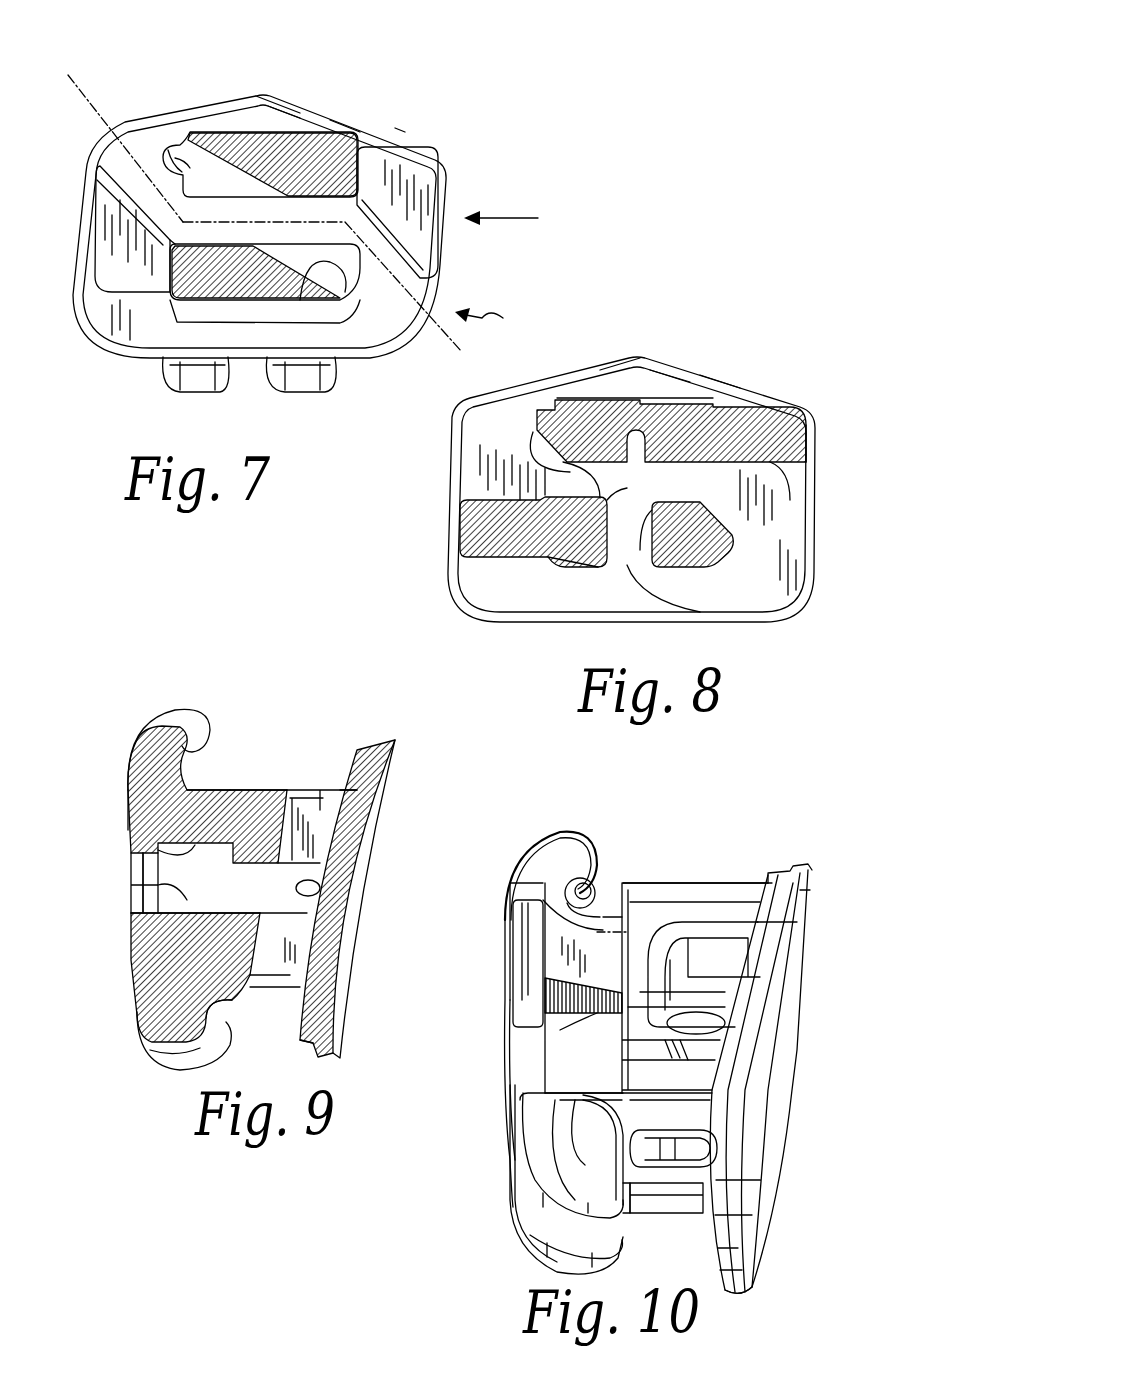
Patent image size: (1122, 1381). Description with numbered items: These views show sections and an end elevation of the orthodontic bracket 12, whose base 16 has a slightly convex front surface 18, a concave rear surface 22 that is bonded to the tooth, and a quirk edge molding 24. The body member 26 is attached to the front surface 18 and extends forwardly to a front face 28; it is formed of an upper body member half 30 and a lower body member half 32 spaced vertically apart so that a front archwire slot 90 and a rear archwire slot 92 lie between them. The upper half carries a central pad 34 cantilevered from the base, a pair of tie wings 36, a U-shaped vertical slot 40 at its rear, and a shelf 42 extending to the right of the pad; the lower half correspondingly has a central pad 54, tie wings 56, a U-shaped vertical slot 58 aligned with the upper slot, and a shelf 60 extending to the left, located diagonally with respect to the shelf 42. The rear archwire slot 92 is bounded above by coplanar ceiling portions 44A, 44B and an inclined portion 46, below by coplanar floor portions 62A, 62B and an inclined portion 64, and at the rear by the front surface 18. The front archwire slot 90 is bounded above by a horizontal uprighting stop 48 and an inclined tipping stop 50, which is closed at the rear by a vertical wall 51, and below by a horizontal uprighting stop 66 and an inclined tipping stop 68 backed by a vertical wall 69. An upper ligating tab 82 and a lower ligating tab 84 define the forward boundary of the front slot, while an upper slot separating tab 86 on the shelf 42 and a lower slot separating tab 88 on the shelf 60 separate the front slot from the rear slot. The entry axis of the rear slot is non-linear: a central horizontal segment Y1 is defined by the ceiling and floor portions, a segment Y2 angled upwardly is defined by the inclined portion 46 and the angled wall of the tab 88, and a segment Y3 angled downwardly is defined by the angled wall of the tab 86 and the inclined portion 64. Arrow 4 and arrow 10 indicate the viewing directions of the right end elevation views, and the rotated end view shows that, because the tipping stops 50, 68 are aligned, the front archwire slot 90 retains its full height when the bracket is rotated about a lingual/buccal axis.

In FIG. 7, the arrow 4 is at (538, 218).
In FIG. 7, the arrow 10 is at (496, 310).
In FIG. 7, the bracket 12 is at (226, 82).
In FIG. 8, the bracket 12 is at (800, 372).
In FIG. 9, the bracket 12 is at (118, 704).
In FIG. 10, the bracket 12 is at (533, 816).
In FIG. 7, the base 16 is at (270, 88).
In FIG. 8, the base 16 is at (722, 360).
In FIG. 9, the base 16 is at (374, 733).
In FIG. 10, the base 16 is at (818, 850).
In FIG. 7, the front surface 18 is at (290, 118).
In FIG. 8, the front surface 18 is at (660, 372).
In FIG. 9, the front surface 18 is at (343, 790).
In FIG. 10, the front surface 18 is at (717, 1103).
In FIG. 9, the rear surface 22 is at (350, 933).
In FIG. 10, the rear surface 22 is at (780, 1057).
In FIG. 7, the quirk edge molding 24 is at (347, 112).
In FIG. 8, the quirk edge molding 24 is at (625, 362).
In FIG. 9, the quirk edge molding 24 is at (303, 1060).
In FIG. 10, the quirk edge molding 24 is at (723, 1297).
In FIG. 7, the body member 26 is at (362, 130).
In FIG. 8, the body member 26 is at (828, 437).
In FIG. 9, the body member 26 is at (206, 762).
In FIG. 10, the body member 26 is at (704, 862).
In FIG. 9, the front face 28 is at (127, 817).
In FIG. 10, the front face 28 is at (508, 955).
In FIG. 9, the upper body member half 30 is at (242, 772).
In FIG. 10, the upper body member half 30 is at (613, 900).
In FIG. 9, the lower body member half 32 is at (145, 983).
In FIG. 10, the lower body member half 32 is at (637, 1212).
In FIG. 7, the central pad 34 is at (255, 132).
In FIG. 8, the central pad 34 is at (590, 397).
In FIG. 9, the central pad 34 is at (303, 800).
In FIG. 10, the central pad 34 is at (613, 947).
In FIG. 9, the tie wings 36 is at (198, 708).
In FIG. 10, the tie wings 36 is at (580, 842).
In FIG. 9, the U-shaped vertical slot 40 is at (323, 827).
In FIG. 8, the shelf 42 is at (750, 405).
In FIG. 8, the ceiling portion 44A is at (770, 462).
In FIG. 8, the ceiling portion 44B is at (540, 487).
In FIG. 8, the inclined portion 46 is at (543, 443).
In FIG. 7, the horizontal uprighting stop 48 is at (312, 222).
In FIG. 9, the horizontal uprighting stop 48 is at (197, 847).
In FIG. 10, the horizontal uprighting stop 48 is at (613, 990).
In FIG. 7, the inclined tipping stop 50 is at (170, 142).
In FIG. 10, the inclined tipping stop 50 is at (597, 1013).
In FIG. 7, the vertical wall 51 is at (180, 152).
In FIG. 8, the central pad 54 is at (567, 560).
In FIG. 9, the central pad 54 is at (262, 960).
In FIG. 10, the central pad 54 is at (647, 1173).
In FIG. 7, the tie wings 56 is at (272, 380).
In FIG. 9, the tie wings 56 is at (185, 1050).
In FIG. 10, the tie wings 56 is at (557, 1203).
In FIG. 8, the U-shaped vertical slot 58 is at (645, 548).
In FIG. 9, the U-shaped vertical slot 58 is at (283, 967).
In FIG. 10, the U-shaped vertical slot 58 is at (655, 1147).
In FIG. 8, the shelf 60 is at (465, 552).
In FIG. 8, the floor portion 62A is at (680, 498).
In FIG. 8, the floor portion 62B is at (580, 503).
In FIG. 7, the inclined portion 64 is at (345, 268).
In FIG. 8, the inclined portion 64 is at (730, 523).
In FIG. 7, the horizontal uprighting stop 66 is at (200, 243).
In FIG. 9, the horizontal uprighting stop 66 is at (150, 913).
In FIG. 7, the inclined tipping stop 68 is at (350, 265).
In FIG. 10, the inclined tipping stop 68 is at (587, 1065).
In FIG. 7, the vertical wall 69 is at (277, 282).
In FIG. 10, the upper ligating tab 82 is at (522, 953).
In FIG. 9, the lower ligating tab 84 is at (143, 883).
In FIG. 7, the upper slot separating tab 86 is at (420, 247).
In FIG. 10, the upper slot separating tab 86 is at (705, 993).
In FIG. 7, the lower slot separating tab 88 is at (100, 257).
In FIG. 9, the front archwire slot 90 is at (140, 893).
In FIG. 10, the front archwire slot 90 is at (580, 1075).
In FIG. 9, the rear archwire slot 92 is at (320, 895).
In FIG. 7, the first segment Y1 is at (398, 128).
In FIG. 7, the second segment Y2 is at (70, 76).
In FIG. 7, the third segment Y3 is at (455, 360).